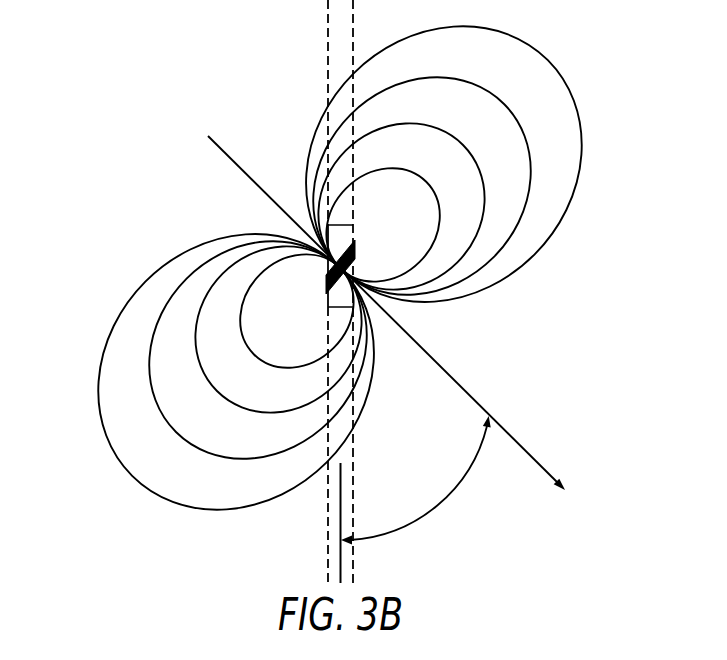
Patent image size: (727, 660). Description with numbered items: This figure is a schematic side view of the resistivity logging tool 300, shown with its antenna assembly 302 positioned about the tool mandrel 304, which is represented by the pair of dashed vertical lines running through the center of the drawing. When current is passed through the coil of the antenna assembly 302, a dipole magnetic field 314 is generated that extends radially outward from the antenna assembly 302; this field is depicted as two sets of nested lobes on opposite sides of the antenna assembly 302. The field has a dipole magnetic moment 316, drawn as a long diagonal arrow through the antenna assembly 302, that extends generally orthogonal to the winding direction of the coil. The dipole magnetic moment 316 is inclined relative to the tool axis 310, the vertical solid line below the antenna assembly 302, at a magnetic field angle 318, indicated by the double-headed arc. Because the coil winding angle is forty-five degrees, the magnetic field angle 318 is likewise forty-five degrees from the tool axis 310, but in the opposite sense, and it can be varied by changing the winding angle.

The resistivity logging tool 300 is at (345, 291).
The antenna assembly 302 is at (368, 247).
The tool mandrel 304 is at (328, 72).
The tool axis 310 is at (340, 557).
The dipole magnetic field 314 is at (580, 128).
The dipole magnetic moment 316 is at (523, 450).
The magnetic field angle 318 is at (452, 500).